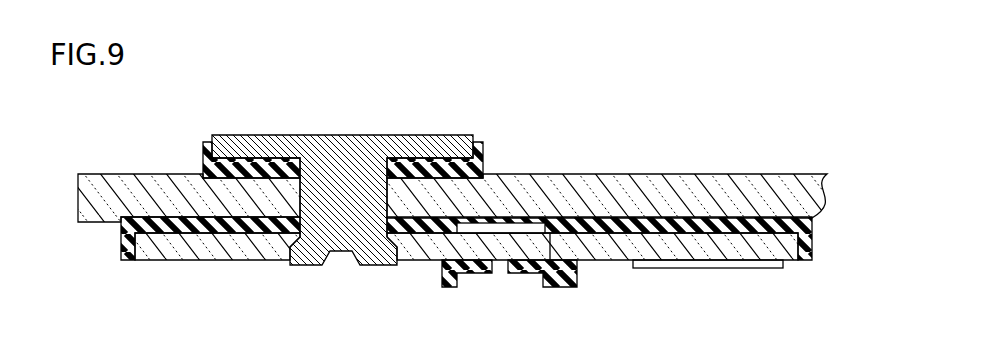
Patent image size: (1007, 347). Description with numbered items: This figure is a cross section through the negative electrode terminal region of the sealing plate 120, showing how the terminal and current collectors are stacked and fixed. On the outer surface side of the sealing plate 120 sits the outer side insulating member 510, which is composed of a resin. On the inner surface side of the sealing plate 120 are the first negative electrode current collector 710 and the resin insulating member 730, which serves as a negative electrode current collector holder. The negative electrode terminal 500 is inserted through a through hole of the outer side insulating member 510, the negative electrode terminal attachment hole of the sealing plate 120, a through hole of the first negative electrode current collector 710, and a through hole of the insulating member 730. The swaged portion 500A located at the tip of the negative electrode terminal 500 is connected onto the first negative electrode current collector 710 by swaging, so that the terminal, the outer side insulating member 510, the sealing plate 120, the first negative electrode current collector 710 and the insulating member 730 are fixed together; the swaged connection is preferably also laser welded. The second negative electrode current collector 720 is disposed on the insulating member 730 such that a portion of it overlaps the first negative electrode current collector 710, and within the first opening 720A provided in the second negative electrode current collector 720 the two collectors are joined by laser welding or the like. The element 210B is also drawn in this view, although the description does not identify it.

The sealing plate 120 is at (122, 190).
The outer side insulating member 510 is at (200, 145).
The negative electrode terminal 500 is at (295, 142).
The swaged portion 500A is at (312, 265).
The insulating member 730 is at (610, 218).
The first negative electrode current collector 710 is at (202, 248).
The second negative electrode current collector 720 is at (604, 248).
The first opening 720A is at (500, 267).
The support member 210B is at (706, 268).